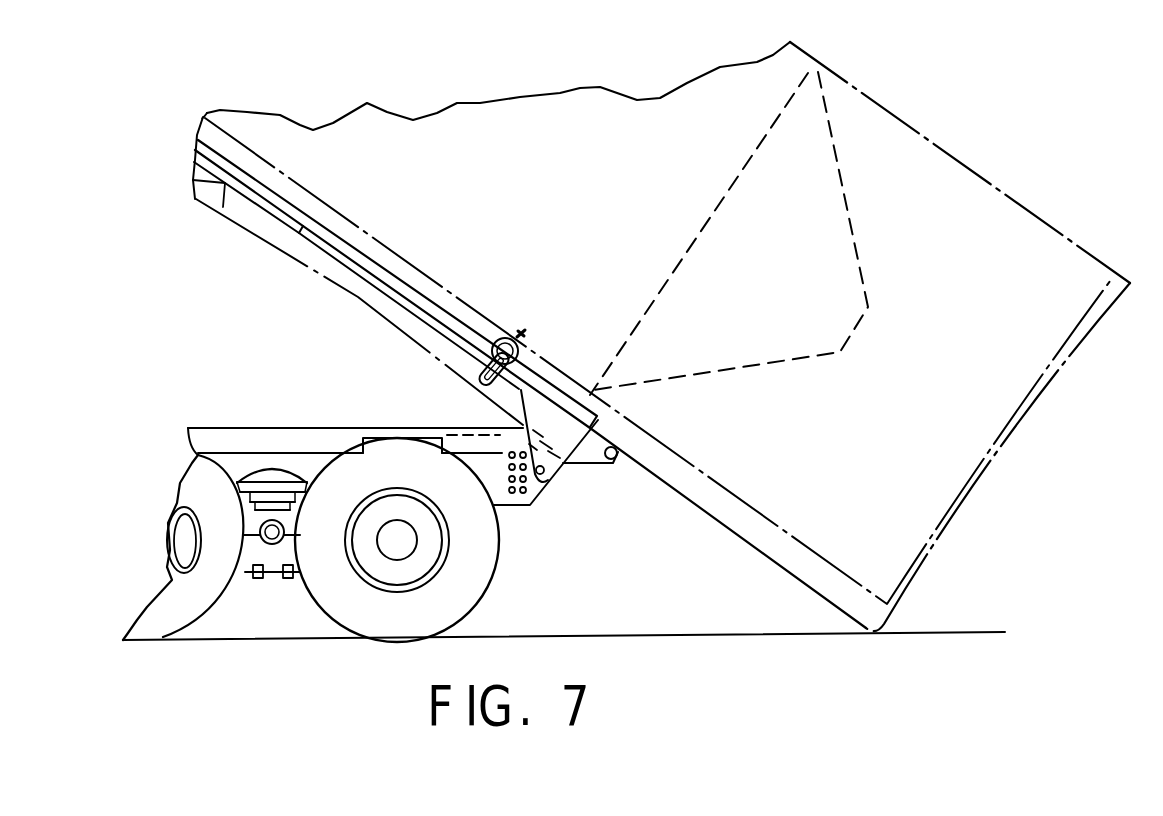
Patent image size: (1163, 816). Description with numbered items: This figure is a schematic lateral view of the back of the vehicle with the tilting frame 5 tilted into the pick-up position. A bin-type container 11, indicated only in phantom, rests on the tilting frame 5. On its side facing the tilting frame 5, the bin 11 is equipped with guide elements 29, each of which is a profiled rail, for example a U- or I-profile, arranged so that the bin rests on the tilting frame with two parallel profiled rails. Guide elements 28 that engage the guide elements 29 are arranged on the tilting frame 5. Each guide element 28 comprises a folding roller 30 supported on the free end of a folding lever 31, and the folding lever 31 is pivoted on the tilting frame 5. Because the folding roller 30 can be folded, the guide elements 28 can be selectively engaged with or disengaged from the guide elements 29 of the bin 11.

The tilting frame 5 is at (310, 247).
The bin-type container 11 is at (683, 290).
The guide element 28 is at (528, 335).
The guide element 29 is at (667, 468).
The folding roller 30 is at (503, 338).
The folding lever 31 is at (483, 368).